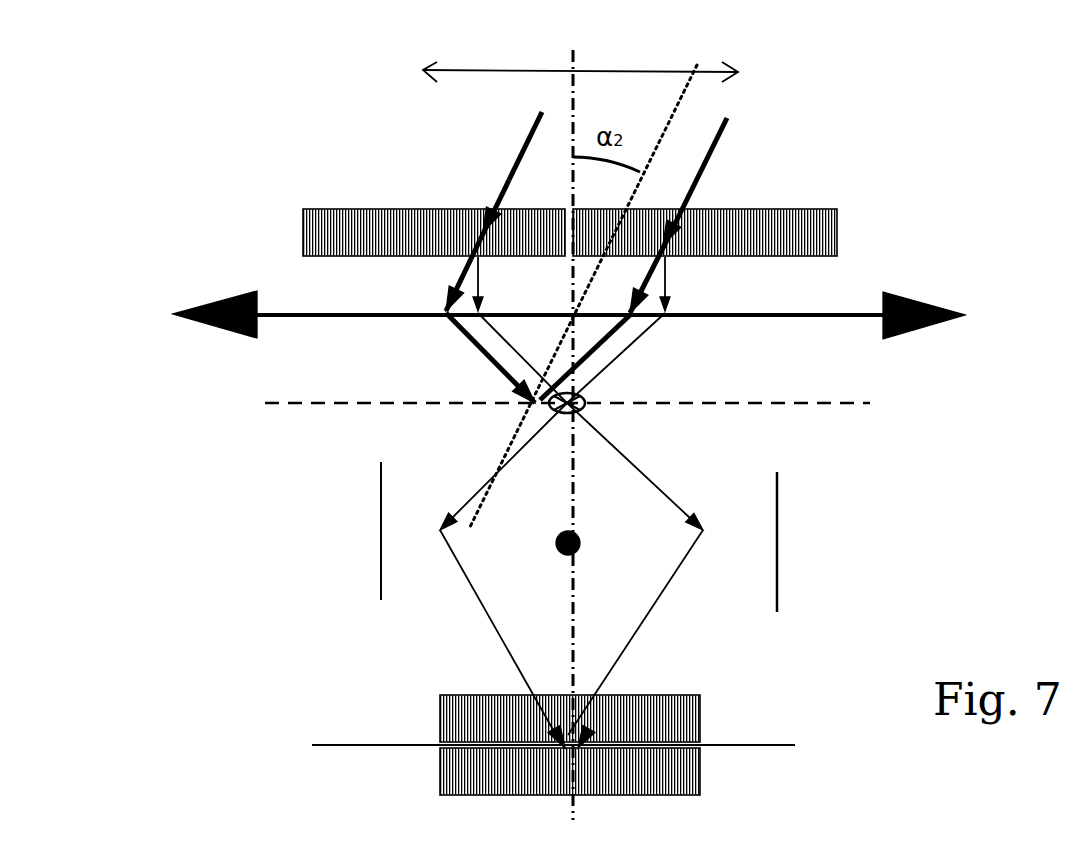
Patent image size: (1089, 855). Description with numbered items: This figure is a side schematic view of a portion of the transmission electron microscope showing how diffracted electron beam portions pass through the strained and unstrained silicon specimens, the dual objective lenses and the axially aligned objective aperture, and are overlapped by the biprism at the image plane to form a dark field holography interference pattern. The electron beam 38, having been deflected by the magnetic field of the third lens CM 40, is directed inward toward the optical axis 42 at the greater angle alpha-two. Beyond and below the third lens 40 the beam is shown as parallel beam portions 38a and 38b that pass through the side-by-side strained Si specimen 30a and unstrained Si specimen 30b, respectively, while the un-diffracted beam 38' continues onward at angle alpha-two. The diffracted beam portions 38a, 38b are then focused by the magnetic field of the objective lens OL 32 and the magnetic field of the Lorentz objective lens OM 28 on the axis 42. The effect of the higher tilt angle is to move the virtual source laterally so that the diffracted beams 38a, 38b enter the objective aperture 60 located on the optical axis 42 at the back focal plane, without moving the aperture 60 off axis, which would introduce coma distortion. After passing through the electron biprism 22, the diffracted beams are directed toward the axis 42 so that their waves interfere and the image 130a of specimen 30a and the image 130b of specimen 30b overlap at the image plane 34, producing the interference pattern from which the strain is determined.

The optical axis 42 is at (574, 52).
The third lens CM 40 is at (487, 75).
The electron beam 38 is at (632, 174).
The un-diffracted beam 38' is at (532, 320).
The beam portion 38a is at (670, 286).
The beam portion 38b is at (508, 348).
The strained silicon specimen 30a is at (772, 212).
The unstrained silicon specimen 30b is at (382, 214).
The objective lens OL 32 is at (286, 312).
The Lorentz objective lens OM 28 is at (143, 262).
The objective aperture 60 is at (538, 412).
The electron biprism 22 is at (594, 550).
The image plane 34 is at (336, 745).
The image of strained specimen 130a is at (700, 718).
The image of unstrained specimen 130b is at (700, 775).